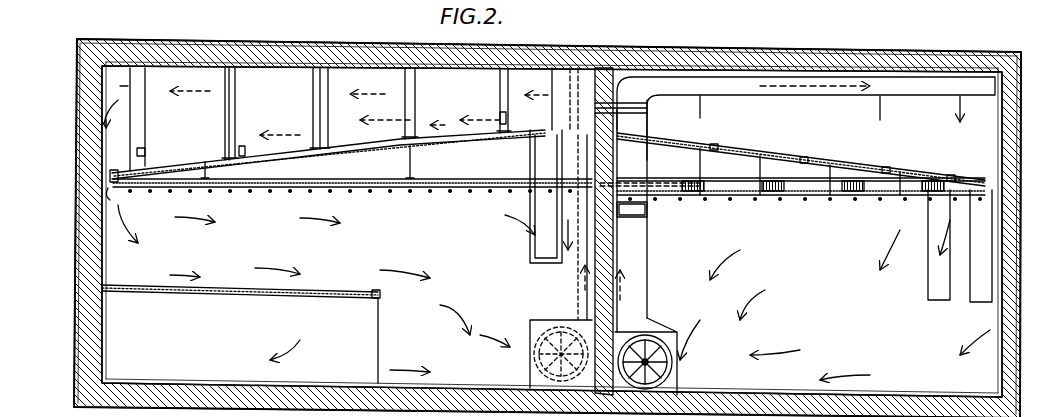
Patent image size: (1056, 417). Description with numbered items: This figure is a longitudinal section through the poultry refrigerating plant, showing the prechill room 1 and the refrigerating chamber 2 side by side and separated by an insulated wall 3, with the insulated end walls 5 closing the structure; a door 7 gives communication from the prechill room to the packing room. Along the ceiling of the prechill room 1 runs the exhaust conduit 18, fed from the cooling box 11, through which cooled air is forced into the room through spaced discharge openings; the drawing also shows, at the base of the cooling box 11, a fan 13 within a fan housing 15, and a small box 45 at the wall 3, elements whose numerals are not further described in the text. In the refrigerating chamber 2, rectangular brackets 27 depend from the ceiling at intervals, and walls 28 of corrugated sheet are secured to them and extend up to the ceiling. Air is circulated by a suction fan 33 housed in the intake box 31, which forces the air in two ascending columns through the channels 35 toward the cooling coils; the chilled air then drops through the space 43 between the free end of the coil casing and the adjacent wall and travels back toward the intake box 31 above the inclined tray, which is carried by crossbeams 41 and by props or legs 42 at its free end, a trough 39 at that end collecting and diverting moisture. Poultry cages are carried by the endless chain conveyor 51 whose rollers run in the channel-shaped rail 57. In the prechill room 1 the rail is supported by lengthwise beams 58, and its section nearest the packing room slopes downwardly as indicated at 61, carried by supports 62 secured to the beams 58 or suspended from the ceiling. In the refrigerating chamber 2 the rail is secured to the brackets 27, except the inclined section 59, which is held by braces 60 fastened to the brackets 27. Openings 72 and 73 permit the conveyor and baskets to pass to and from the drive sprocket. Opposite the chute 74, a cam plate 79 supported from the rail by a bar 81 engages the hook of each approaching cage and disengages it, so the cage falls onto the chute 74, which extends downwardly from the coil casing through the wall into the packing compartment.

The prechill room 1 is at (835, 239).
The refrigerating chamber 2 is at (378, 239).
The insulated wall 3 is at (614, 244).
The wall 5 is at (102, 67).
The door 7 is at (540, 107).
The cooling box 11 is at (648, 244).
The fan 13 is at (668, 352).
The fan housing 15 is at (672, 333).
The exhaust conduit 18 is at (835, 95).
The rectangular brackets 27 is at (240, 117).
The walls 28 is at (150, 130).
The intake box 31 is at (528, 310).
The suction fan 33 is at (534, 346).
The channels 35 is at (578, 255).
The trough 39 is at (382, 290).
The crossbeams 41 is at (110, 296).
The props or legs 42 is at (378, 340).
The space 43 is at (110, 200).
The outlet box 45 is at (648, 212).
The conveyor 51 is at (452, 146).
The rail 57 is at (448, 188).
The beams 58 is at (770, 171).
The inclined rail section 59 is at (370, 137).
The braces 60 is at (145, 152).
The sloping rail section 61 is at (752, 150).
The supports 62 is at (710, 165).
The opening 72 is at (980, 303).
The opening 73 is at (934, 302).
The chute 74 is at (530, 238).
The cam plate 79 is at (556, 140).
The bar 81 is at (554, 125).